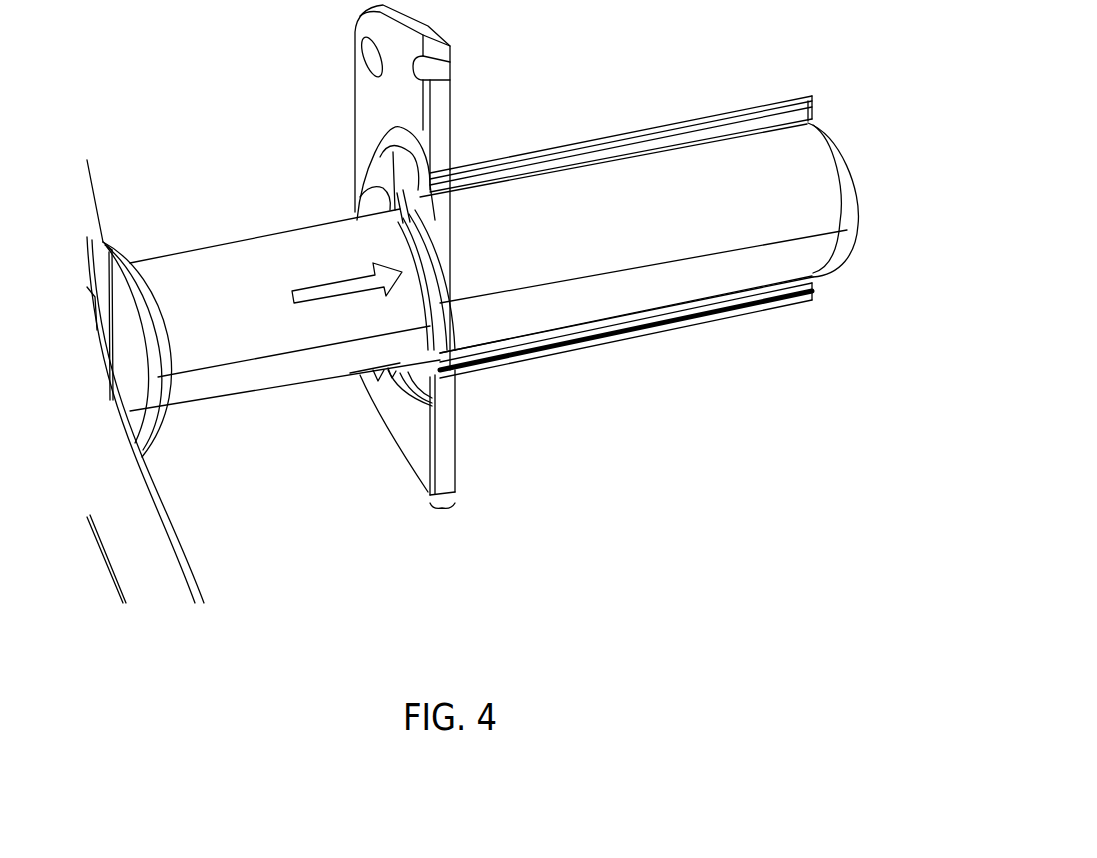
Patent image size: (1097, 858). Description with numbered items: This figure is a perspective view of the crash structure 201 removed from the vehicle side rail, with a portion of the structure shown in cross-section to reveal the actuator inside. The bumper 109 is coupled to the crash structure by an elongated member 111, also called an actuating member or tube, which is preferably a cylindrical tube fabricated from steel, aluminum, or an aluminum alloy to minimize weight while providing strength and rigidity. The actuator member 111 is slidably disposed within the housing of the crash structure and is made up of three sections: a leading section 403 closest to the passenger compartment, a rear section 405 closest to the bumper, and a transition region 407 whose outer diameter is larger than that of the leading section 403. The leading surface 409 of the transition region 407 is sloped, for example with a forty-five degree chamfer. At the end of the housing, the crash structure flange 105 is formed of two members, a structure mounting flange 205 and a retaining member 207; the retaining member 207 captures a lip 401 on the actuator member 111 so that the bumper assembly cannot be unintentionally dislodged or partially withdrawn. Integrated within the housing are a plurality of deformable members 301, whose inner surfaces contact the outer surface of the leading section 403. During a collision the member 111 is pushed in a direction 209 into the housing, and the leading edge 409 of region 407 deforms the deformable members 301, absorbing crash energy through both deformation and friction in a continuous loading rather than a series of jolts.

The crash structure flange 105 is at (444, 520).
The bumper 109 is at (130, 537).
The elongated member 111 is at (219, 229).
The crash structure 201 is at (555, 533).
The structure mounting flange 205 is at (448, 418).
The retaining member 207 is at (407, 428).
The direction 209 is at (352, 283).
The deformable member 301 is at (668, 148).
The lip 401 is at (401, 235).
The leading section 403 is at (608, 238).
The rear section 405 is at (220, 309).
The transition region 407 is at (444, 259).
The leading surface 409 is at (448, 275).